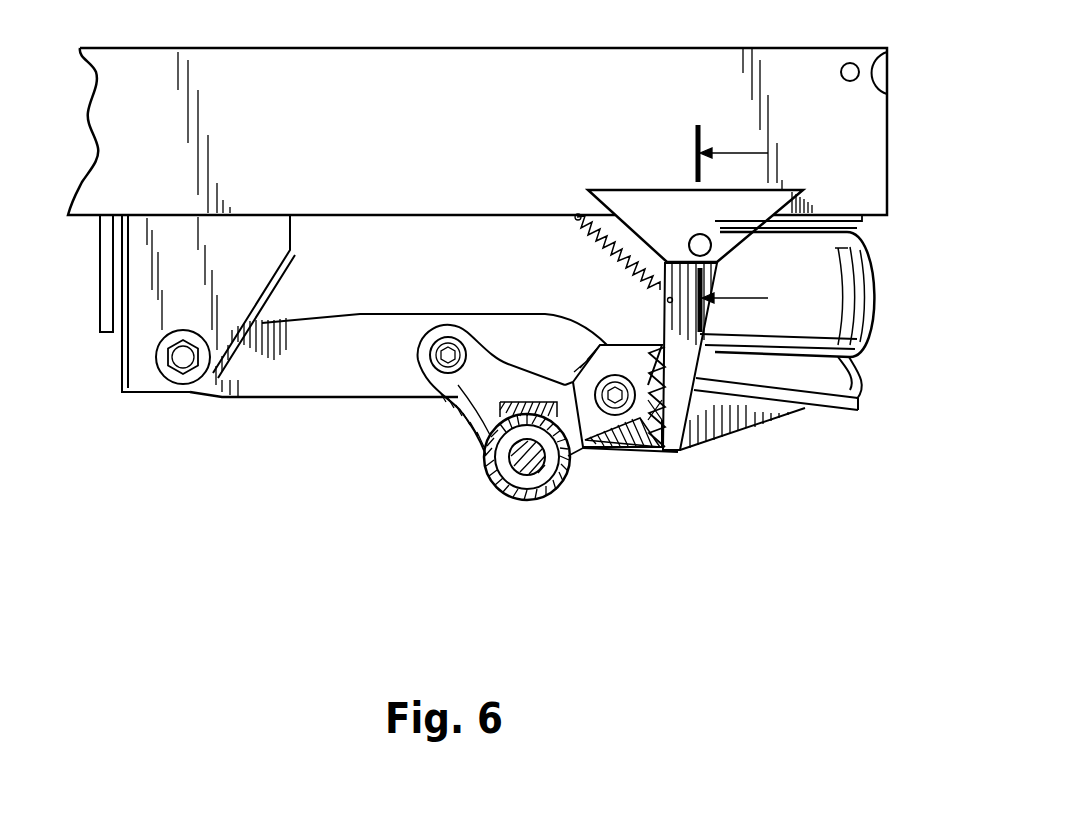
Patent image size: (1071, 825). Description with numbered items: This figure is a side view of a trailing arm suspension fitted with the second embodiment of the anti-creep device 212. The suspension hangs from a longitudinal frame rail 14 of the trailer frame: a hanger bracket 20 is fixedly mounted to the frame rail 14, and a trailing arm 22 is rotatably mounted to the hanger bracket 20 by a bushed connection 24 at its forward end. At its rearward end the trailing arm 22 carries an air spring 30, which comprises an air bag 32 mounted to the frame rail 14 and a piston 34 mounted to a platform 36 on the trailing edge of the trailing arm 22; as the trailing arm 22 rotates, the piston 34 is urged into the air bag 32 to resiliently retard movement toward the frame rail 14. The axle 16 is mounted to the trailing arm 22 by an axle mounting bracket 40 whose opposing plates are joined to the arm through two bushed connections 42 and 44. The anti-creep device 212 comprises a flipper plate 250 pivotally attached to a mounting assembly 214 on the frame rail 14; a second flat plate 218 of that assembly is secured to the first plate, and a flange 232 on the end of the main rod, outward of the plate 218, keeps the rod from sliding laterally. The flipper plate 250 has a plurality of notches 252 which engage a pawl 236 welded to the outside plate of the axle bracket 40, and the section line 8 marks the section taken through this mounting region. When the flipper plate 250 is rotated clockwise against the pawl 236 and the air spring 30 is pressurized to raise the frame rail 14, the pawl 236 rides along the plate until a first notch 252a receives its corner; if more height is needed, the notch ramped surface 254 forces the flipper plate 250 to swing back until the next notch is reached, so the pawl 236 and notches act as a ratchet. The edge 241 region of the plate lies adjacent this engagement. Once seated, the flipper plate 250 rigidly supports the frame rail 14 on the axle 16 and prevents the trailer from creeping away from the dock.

The frame rail 14 is at (802, 47).
The section line 8- 8 is at (733, 225).
The hanger bracket 20 is at (148, 393).
The trailing arm 22 is at (345, 400).
The bushed connection 24 is at (198, 343).
The axle mounting bracket 40 is at (468, 456).
The bushed connection 42 is at (442, 332).
The axle 16 is at (512, 498).
The bushed connection 44 is at (600, 358).
The pawl 236 is at (629, 345).
The notches 252 is at (633, 452).
The notch ramped surface 254 is at (649, 452).
The lever lower edge 241 is at (578, 492).
The second flat plate 218 is at (660, 190).
The flange 232 is at (706, 238).
The anti-creep device 212 is at (565, 195).
The mounting assembly 214 is at (818, 208).
The air spring 30 is at (869, 338).
The air bag 32 is at (818, 279).
The flipper plate 250 is at (738, 334).
The first notch 252a is at (700, 363).
The piston 34 is at (851, 402).
The platform 36 is at (808, 405).